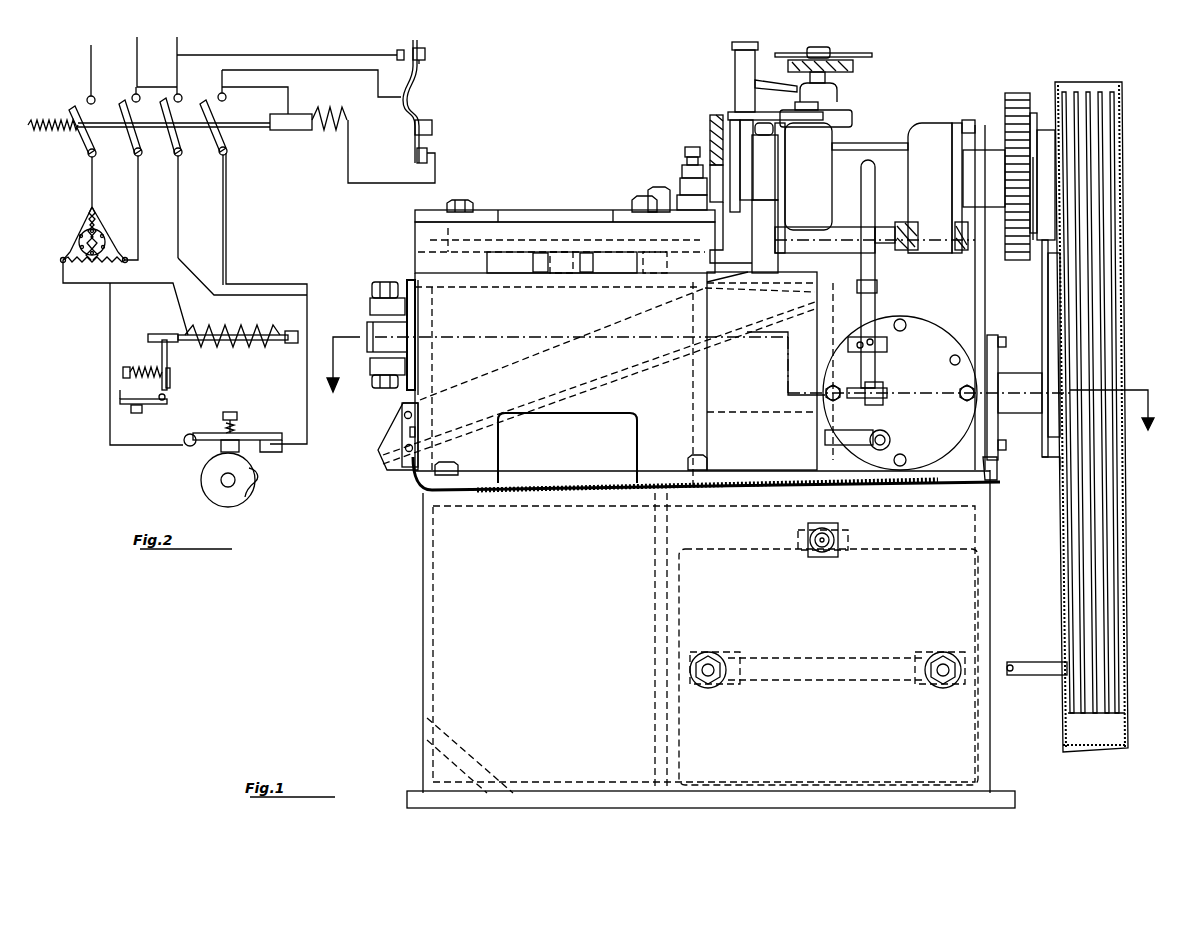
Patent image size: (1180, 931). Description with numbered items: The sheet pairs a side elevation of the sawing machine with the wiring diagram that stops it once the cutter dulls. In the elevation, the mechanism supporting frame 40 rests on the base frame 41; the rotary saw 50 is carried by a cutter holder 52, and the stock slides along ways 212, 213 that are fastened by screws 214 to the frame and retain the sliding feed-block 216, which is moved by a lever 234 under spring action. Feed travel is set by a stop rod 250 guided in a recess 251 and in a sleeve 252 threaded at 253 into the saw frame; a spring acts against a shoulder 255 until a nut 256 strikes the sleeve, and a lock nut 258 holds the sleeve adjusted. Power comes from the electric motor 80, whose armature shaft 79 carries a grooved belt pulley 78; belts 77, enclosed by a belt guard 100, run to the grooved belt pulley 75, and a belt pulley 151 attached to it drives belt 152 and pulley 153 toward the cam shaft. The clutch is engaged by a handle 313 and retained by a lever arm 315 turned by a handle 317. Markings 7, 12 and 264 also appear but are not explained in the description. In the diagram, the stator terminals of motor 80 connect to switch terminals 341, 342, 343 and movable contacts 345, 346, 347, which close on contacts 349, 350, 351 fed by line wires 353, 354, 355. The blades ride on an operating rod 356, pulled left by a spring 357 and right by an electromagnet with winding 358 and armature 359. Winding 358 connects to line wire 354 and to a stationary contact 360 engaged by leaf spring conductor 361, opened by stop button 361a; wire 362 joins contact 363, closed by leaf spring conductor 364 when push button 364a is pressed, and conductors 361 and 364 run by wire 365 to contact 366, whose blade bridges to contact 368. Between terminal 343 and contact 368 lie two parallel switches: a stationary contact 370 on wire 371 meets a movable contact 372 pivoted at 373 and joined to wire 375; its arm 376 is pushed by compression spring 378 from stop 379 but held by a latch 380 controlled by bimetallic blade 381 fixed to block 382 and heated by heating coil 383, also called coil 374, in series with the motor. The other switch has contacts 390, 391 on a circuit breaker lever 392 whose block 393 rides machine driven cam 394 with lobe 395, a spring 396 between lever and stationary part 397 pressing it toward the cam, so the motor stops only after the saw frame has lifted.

In FIG. 1, the section line 7- 7 is at (740, 383).
In FIG. 1, the machine frame direction arrow 12 is at (598, 82).
In FIG. 1, the mechanism supporting frame 40 is at (457, 452).
In FIG. 1, the base frame 41 is at (445, 602).
In FIG. 1, the rotary cutter or saw 50 is at (683, 165).
In FIG. 1, the cutter holder 52 is at (763, 185).
In FIG. 1, the belt pulley 75 is at (1112, 153).
In FIG. 1, the belts 77 is at (1070, 367).
In FIG. 1, the belt pulley 78 is at (1117, 677).
In FIG. 1, the armature shaft 79 is at (1033, 676).
In FIG. 2, the electric motor 80 is at (70, 231).
In FIG. 1, the belt guard 100 is at (1127, 522).
In FIG. 1, the belt pulley 151 is at (1053, 152).
In FIG. 1, the belt 152 is at (1050, 258).
In FIG. 1, the pulley 153 is at (1050, 370).
In FIG. 1, the way 212 is at (483, 218).
In FIG. 1, the way 213 is at (626, 213).
In FIG. 1, the screws 214 is at (465, 207).
In FIG. 1, the sliding feed-block 216 is at (570, 217).
In FIG. 1, the lever 234 is at (840, 227).
In FIG. 1, the stop rod 250 is at (793, 273).
In FIG. 1, the recess 251 is at (833, 320).
In FIG. 1, the sleeve 252 is at (888, 268).
In FIG. 1, the threaded portion 253 is at (938, 262).
In FIG. 1, the shoulder 255 is at (805, 287).
In FIG. 1, the nut 256 is at (905, 225).
In FIG. 1, the lock nut 258 is at (968, 242).
In FIG. 1, the pipe 264 is at (885, 226).
In FIG. 1, the handle 313 is at (868, 170).
In FIG. 1, the lever arm 315 is at (880, 412).
In FIG. 1, the handle 317 is at (857, 437).
In FIG. 2, the switch terminal 341 is at (91, 157).
In FIG. 2, the switch terminal 342 is at (137, 156).
In FIG. 2, the switch terminal 343 is at (177, 156).
In FIG. 2, the movable switch contact 345 is at (71, 109).
In FIG. 2, the movable switch contact 346 is at (123, 115).
In FIG. 2, the movable switch contact 347 is at (164, 110).
In FIG. 2, the switch contact 349 is at (89, 97).
In FIG. 2, the switch contact 350 is at (133, 95).
In FIG. 2, the switch contact 351 is at (181, 95).
In FIG. 2, the main line wire 353 is at (91, 55).
In FIG. 2, the main line wire 354 is at (137, 55).
In FIG. 2, the main line wire 355 is at (178, 45).
In FIG. 2, the operating rod 356 is at (255, 130).
In FIG. 2, the spring 357 is at (45, 133).
In FIG. 2, the winding 358 is at (325, 133).
In FIG. 2, the armature 359 is at (277, 120).
In FIG. 2, the stationary contact 360 is at (427, 150).
In FIG. 2, the leaf spring conductor 361 is at (413, 143).
In FIG. 2, the button 361a is at (432, 127).
In FIG. 2, the wire 362 is at (306, 55).
In FIG. 2, the stationary switch contact 363 is at (400, 50).
In FIG. 2, the leaf spring conductor 364 is at (419, 45).
In FIG. 2, the push button 364a is at (425, 57).
In FIG. 2, the wire 365 is at (351, 70).
In FIG. 2, the switch contact 366 is at (226, 97).
In FIG. 2, the switch contact 368 is at (222, 155).
In FIG. 2, the stationary contact 370 is at (139, 421).
In FIG. 2, the wire 371 is at (110, 312).
In FIG. 2, the movable contact 372 is at (120, 399).
In FIG. 2, the pivot 373 is at (164, 401).
In FIG. 2, the heating coil 374 is at (166, 350).
In FIG. 2, the wire 375 is at (227, 265).
In FIG. 2, the arm 376 is at (170, 382).
In FIG. 2, the compression spring 378 is at (137, 367).
In FIG. 2, the stationary stop 379 is at (123, 373).
In FIG. 2, the latch 380 is at (164, 340).
In FIG. 2, the bimetallic blade 381 is at (240, 333).
In FIG. 2, the block 382 is at (291, 343).
In FIG. 2, the heating coil 383 is at (198, 333).
In FIG. 2, the contact 390 is at (270, 441).
In FIG. 2, the contact 391 is at (282, 449).
In FIG. 2, the circuit breaker lever 392 is at (206, 442).
In FIG. 2, the cam-rubbing block 393 is at (240, 451).
In FIG. 2, the machine driven cam 394 is at (247, 491).
In FIG. 2, the lobe 395 is at (258, 477).
In FIG. 2, the spring 396 is at (234, 432).
In FIG. 2, the stationary part 397 is at (231, 413).